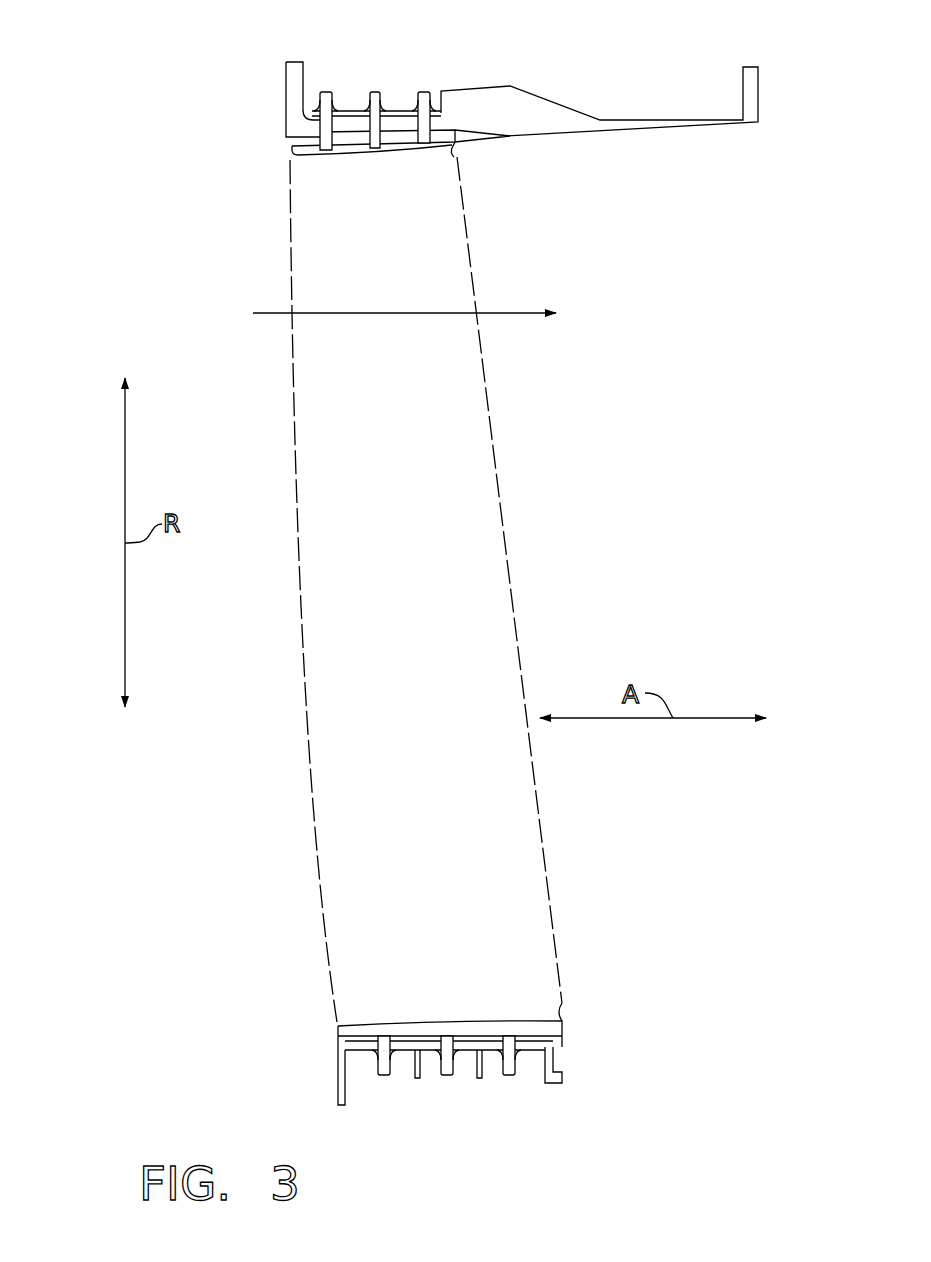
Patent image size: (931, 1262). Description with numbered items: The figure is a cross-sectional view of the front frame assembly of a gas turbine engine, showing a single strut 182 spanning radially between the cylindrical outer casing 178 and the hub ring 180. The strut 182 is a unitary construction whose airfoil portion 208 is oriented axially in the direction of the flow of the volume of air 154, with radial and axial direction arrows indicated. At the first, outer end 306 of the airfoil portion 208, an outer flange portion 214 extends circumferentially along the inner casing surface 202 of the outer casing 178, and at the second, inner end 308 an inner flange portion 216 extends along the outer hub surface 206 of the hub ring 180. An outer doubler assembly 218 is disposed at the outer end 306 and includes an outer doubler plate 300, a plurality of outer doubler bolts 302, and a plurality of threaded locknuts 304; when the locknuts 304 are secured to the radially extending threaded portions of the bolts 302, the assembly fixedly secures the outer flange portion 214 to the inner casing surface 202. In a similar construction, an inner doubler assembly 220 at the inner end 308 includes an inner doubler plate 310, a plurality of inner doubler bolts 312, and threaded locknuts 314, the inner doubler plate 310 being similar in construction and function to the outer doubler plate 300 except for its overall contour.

The volume of air 154 is at (288, 312).
The cylindrical outer casing 178 is at (286, 82).
The hub ring 180 is at (557, 1055).
The strut 182 is at (458, 178).
The inner casing surface 202 is at (445, 128).
The outer hub surface 206 is at (361, 1053).
The airfoil portion 208 is at (518, 948).
The outer flange portion 214 is at (288, 143).
The inner flange portion 216 is at (543, 1035).
The outer doubler assembly 218 is at (469, 108).
The inner doubler assembly 220 is at (464, 1065).
The outer doubler plate 300 is at (310, 158).
The outer doubler bolt 302 is at (377, 92).
The threaded locknut 304 is at (410, 100).
The first, outer end 306 is at (453, 152).
The second, inner end 308 is at (557, 1007).
The inner doubler plate 310 is at (356, 1028).
The inner doubler bolt 312 is at (507, 1076).
The threaded locknut 314 is at (517, 1057).